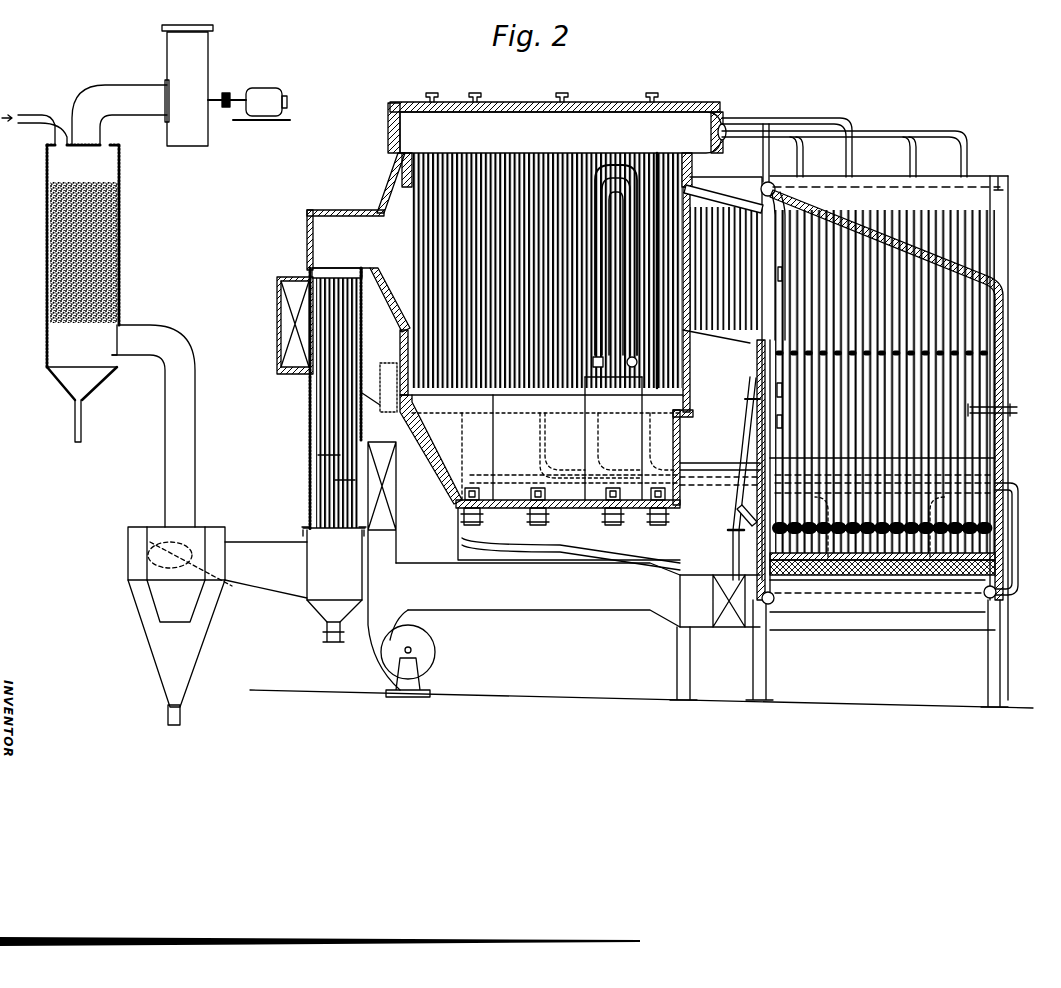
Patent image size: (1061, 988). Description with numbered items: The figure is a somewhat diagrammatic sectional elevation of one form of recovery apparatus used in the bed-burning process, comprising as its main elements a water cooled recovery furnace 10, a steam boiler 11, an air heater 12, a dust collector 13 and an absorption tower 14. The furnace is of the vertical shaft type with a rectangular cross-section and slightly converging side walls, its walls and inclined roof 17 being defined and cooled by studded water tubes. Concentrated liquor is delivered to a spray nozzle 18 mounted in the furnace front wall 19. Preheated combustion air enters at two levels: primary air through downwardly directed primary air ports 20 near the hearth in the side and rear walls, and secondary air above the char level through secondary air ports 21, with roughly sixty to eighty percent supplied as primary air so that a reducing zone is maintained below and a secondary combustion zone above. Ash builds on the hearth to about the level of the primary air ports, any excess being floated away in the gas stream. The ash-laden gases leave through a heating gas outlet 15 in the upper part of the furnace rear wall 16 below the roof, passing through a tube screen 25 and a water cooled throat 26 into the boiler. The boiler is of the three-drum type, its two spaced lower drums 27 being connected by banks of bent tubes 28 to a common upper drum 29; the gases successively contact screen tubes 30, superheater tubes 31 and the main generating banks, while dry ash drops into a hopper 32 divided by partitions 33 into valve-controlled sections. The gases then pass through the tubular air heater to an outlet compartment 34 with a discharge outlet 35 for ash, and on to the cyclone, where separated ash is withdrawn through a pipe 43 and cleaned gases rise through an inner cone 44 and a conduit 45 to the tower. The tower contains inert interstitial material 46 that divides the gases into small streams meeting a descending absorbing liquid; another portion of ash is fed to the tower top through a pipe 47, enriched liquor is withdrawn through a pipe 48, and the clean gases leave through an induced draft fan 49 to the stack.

The water cooled recovery furnace 10 is at (882, 420).
The steam boiler 11 is at (433, 197).
The air heater 12 is at (327, 405).
The dust collector 13 is at (224, 530).
The absorption tower 14 is at (118, 231).
The heating gas outlet 15 is at (761, 433).
The furnace rear wall 16 is at (760, 438).
The inclined roof 17 is at (907, 238).
The spray nozzle 18 is at (977, 410).
The furnace front wall 19 is at (1002, 380).
The primary air ports 20 is at (755, 520).
The secondary air ports 21 is at (772, 385).
The tube screen 25 is at (787, 255).
The water cooled throat 26 is at (724, 270).
The lower drums 27 is at (545, 413).
The banks of bent tubes 28 is at (430, 238).
The upper drum 29 is at (677, 118).
The screen tubes 30 is at (660, 177).
The superheater tubes 31 is at (607, 175).
The hopper 32 is at (546, 472).
The partitions 33 is at (493, 433).
The outlet compartment 34 is at (334, 574).
The discharge outlet 35 is at (332, 640).
The pipe 43 is at (181, 718).
The inner cone 44 is at (176, 601).
The conduit 45 is at (185, 453).
The inert interstitial material 46 is at (119, 272).
The pipe 47 is at (27, 112).
The pipe 48 is at (82, 425).
The induced draft fan 49 is at (208, 62).